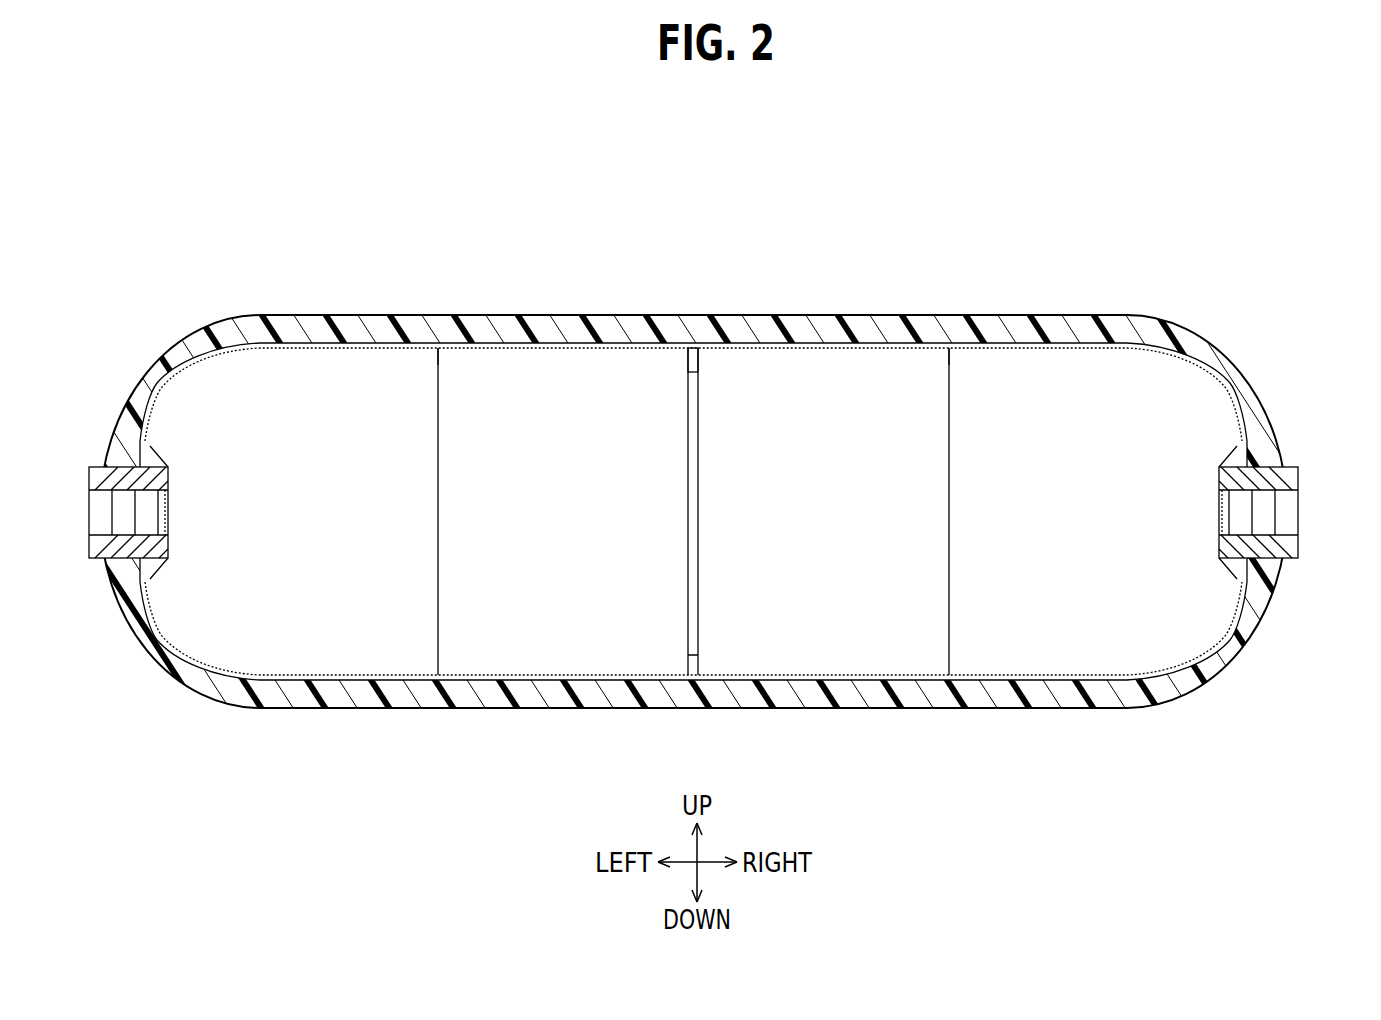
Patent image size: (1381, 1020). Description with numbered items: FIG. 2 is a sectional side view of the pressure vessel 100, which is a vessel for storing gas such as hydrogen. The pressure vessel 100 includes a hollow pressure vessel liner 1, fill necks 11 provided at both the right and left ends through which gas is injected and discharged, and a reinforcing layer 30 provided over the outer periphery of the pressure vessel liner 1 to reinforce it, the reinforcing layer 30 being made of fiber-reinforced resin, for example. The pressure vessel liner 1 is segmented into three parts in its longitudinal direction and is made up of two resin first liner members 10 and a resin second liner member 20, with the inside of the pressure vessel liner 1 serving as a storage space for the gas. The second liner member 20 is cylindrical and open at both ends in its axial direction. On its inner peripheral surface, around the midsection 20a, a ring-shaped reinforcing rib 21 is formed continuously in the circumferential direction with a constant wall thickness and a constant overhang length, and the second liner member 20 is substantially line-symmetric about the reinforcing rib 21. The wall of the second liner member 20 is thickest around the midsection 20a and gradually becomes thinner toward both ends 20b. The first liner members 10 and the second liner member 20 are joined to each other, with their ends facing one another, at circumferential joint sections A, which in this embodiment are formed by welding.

The pressure vessel 100 is at (843, 228).
The pressure vessel liner 1 is at (778, 407).
The first liner member 10 is at (326, 432).
The fill neck 11 is at (108, 487).
The second liner member 20 is at (583, 432).
The midsection 20a is at (694, 345).
The end 20b is at (438, 360).
The reinforcing rib 21 is at (690, 357).
The reinforcing layer 30 is at (1138, 318).
The joint section A is at (437, 358).